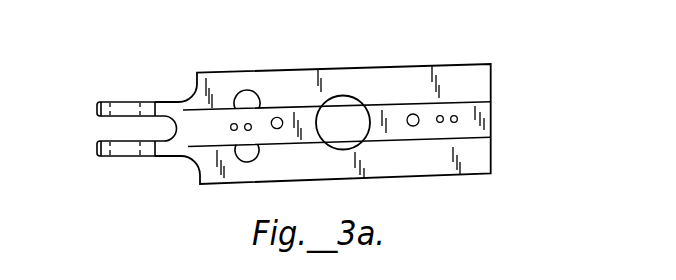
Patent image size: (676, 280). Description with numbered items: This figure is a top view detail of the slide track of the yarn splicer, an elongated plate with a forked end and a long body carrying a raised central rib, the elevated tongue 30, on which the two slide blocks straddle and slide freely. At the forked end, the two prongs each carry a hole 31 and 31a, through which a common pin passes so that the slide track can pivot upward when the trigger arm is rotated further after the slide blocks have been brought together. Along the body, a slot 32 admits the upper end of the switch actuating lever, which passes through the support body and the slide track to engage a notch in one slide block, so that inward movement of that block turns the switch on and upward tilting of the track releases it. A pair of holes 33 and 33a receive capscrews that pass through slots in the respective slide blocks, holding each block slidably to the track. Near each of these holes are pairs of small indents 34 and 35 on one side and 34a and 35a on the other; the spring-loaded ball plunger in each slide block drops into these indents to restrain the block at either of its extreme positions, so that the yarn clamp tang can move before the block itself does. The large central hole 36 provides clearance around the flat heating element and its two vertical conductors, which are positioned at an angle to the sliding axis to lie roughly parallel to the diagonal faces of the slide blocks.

The elevated tongue 30 is at (491, 118).
The hole 31 is at (120, 157).
The hole 31a is at (120, 101).
The slot 32 is at (248, 90).
The hole 33 is at (281, 118).
The indent 34 is at (248, 130).
The indent 35 is at (234, 130).
The hole 36 is at (353, 96).
The hole 33a is at (413, 114).
The indent 34a is at (440, 122).
The indent 35a is at (454, 122).